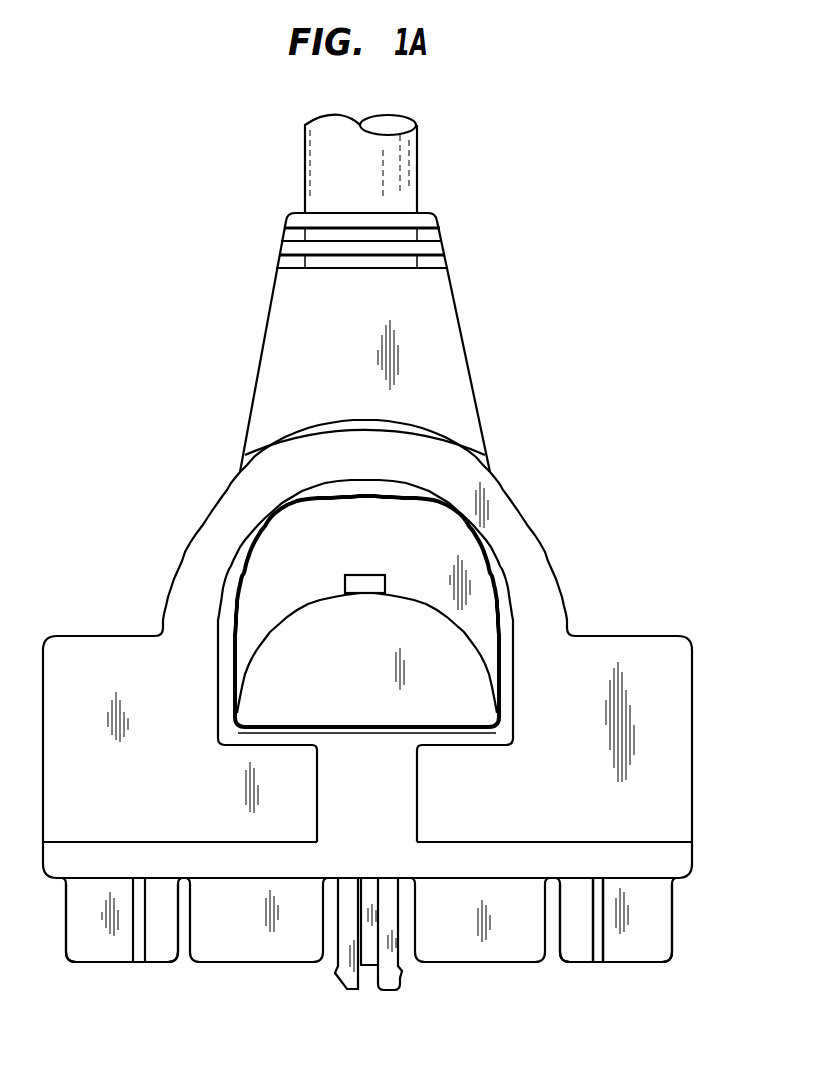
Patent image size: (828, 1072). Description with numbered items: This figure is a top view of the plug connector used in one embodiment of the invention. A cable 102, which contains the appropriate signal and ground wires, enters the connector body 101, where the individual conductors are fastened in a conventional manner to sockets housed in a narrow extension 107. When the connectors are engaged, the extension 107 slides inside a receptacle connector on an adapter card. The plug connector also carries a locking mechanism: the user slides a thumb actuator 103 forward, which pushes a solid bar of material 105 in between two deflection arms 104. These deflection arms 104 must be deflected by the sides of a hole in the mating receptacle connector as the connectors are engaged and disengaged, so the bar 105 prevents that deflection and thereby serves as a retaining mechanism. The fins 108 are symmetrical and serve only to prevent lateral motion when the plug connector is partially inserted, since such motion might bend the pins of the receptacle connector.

The connector body 101 is at (575, 596).
The cable 102 is at (403, 162).
The thumb actuator 103 is at (272, 658).
The deflection arms 104 is at (402, 980).
The solid bar 105 is at (366, 972).
The narrow extension 107 is at (662, 915).
The fins 108 is at (140, 962).